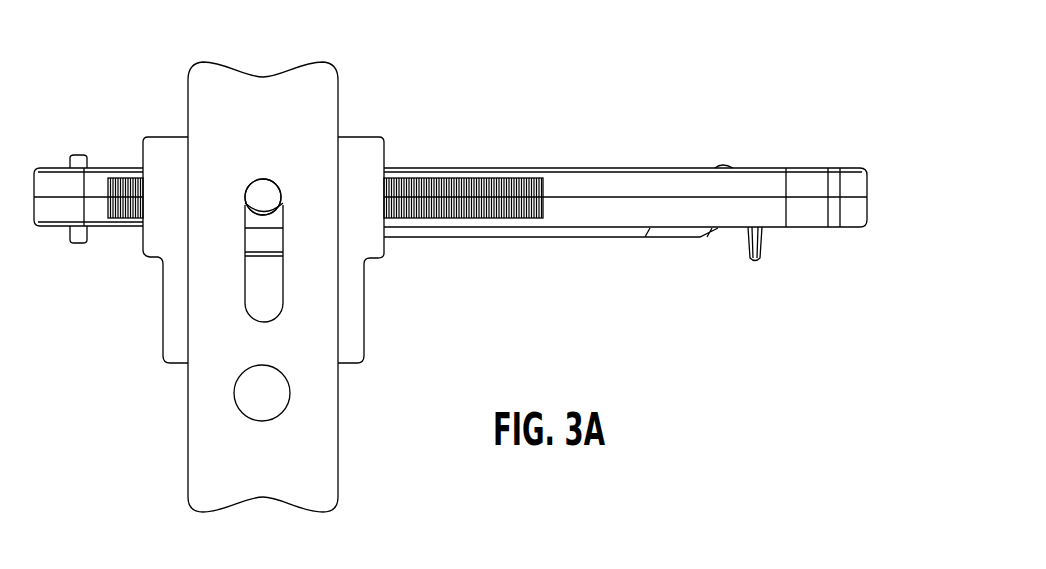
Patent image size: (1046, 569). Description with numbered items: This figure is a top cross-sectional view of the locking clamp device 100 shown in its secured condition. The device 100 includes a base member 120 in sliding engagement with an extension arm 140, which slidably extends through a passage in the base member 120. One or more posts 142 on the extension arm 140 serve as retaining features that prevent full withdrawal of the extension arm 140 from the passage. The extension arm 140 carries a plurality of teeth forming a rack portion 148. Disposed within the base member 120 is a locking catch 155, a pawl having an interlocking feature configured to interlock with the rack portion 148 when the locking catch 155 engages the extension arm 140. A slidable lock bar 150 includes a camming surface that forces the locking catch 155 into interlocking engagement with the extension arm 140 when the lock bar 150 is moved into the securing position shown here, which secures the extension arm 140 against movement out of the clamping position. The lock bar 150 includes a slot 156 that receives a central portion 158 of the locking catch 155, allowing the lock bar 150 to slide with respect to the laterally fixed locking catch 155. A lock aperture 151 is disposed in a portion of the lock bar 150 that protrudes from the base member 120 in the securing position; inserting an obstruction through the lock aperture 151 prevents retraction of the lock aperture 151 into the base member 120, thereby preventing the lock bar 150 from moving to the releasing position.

The device 100 is at (450, 265).
The base member 120 is at (352, 316).
The extension arm 140 is at (587, 228).
The posts 142 is at (80, 154).
The rack portion 148 is at (462, 180).
The lock bar 150 is at (315, 465).
The lock aperture 151 is at (276, 385).
The locking catch 155 is at (270, 216).
The slot 156 is at (247, 270).
The central portion 158 is at (263, 194).